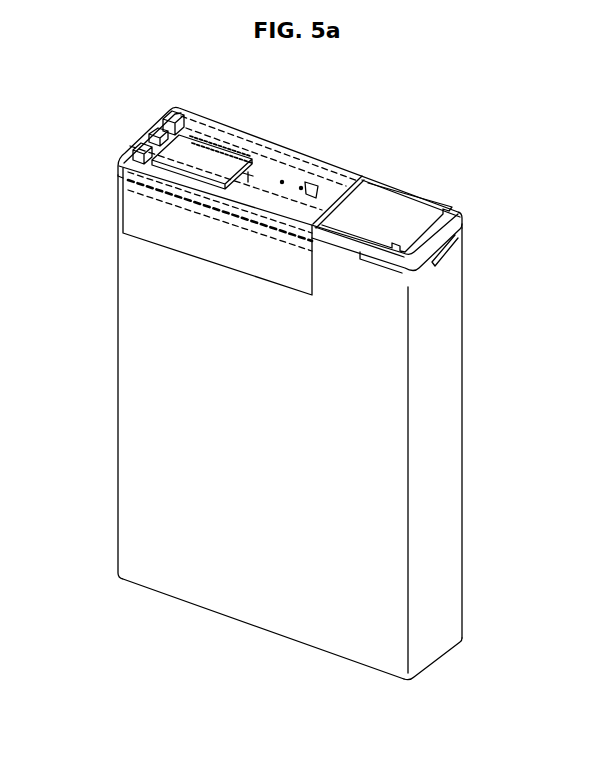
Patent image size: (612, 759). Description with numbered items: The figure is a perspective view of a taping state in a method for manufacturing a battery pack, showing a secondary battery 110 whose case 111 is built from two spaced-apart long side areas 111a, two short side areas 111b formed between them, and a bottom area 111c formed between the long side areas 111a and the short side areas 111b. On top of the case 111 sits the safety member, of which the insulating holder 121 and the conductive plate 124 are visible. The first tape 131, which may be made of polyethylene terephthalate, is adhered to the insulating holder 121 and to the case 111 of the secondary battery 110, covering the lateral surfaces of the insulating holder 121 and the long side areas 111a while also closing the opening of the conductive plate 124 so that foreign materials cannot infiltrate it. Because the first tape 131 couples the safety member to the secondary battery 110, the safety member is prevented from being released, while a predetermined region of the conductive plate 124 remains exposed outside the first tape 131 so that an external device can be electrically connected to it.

The secondary battery 110 is at (105, 356).
The case 111 is at (115, 583).
The long side areas 111a is at (237, 603).
The short side areas 111b is at (450, 600).
The bottom area 111c is at (281, 640).
The insulating holder 121 is at (462, 221).
The conductive plate 124 is at (395, 202).
The first tape 131 is at (268, 134).